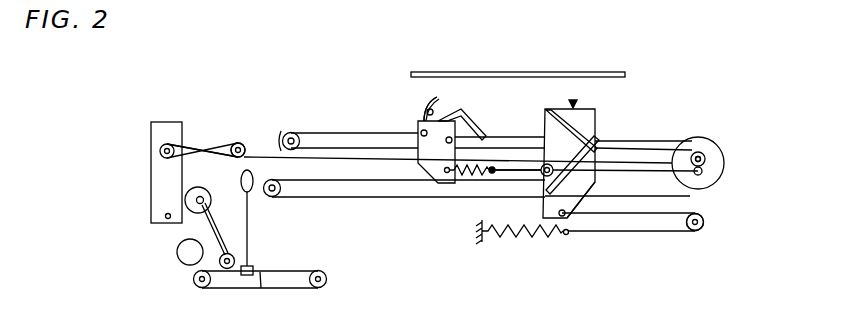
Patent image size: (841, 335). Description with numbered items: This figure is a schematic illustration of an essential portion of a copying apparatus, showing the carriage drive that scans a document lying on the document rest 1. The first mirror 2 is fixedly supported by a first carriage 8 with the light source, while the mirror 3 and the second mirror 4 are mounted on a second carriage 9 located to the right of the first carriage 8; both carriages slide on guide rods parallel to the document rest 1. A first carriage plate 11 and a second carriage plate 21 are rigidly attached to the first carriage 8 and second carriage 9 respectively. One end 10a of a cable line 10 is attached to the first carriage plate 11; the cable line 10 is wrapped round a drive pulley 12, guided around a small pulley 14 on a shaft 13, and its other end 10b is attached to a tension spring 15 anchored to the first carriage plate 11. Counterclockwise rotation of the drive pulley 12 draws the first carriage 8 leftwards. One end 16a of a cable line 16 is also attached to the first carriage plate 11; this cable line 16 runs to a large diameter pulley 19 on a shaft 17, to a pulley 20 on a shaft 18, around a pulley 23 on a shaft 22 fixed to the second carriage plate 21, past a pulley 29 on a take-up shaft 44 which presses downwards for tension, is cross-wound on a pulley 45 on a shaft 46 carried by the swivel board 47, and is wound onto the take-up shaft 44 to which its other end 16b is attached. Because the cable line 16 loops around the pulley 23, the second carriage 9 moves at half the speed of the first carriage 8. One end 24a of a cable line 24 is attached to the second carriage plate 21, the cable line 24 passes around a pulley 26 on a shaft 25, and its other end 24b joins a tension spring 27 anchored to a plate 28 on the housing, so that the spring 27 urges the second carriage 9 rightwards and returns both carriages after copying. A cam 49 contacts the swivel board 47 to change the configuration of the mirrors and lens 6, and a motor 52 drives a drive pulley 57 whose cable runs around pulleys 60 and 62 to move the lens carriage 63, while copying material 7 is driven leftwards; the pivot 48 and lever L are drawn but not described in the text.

The document rest 1 is at (619, 72).
The first mirror 2 is at (465, 137).
The mirror 3 is at (568, 110).
The second mirror 4 is at (567, 222).
The lens 6 is at (241, 182).
The copying material 7 is at (261, 275).
The first carriage 8 is at (469, 112).
The second carriage 9 is at (574, 100).
The cable line 10 is at (336, 133).
The end of cable line 10a is at (422, 132).
The other end of cable line 10b is at (494, 168).
The first carriage plate 11 is at (432, 163).
The drive pulley 12 is at (292, 133).
The shaft 13 is at (701, 157).
The small pulley 14 is at (695, 152).
The tension spring 15 is at (465, 172).
The cable line 16 is at (245, 157).
The end of cable line 16a is at (449, 138).
The other end of cable line 16b is at (236, 143).
The shaft 17 is at (703, 172).
The shaft 18 is at (279, 189).
The large diameter pulley 19 is at (724, 160).
The pulley 20 is at (281, 194).
The second carriage plate 21 is at (597, 112).
The shaft 22 is at (575, 171).
The pulley 23 is at (545, 173).
The cable line 24 is at (660, 230).
The end of cable line 24a is at (560, 225).
The other end of cable line 24b is at (568, 234).
The shaft 25 is at (704, 218).
The pulley 26 is at (701, 228).
The tension spring 27 is at (525, 232).
The plate 28 is at (485, 242).
The pulley 29 is at (243, 145).
The take-up shaft 44 is at (231, 146).
The pulley 45 is at (160, 152).
The shaft 46 is at (165, 144).
The swivel board 47 is at (162, 203).
The pin 48 is at (166, 219).
The cam 49 is at (185, 195).
The motor 52 is at (180, 262).
The drive pulley 57 is at (232, 225).
The pulley 60 is at (203, 287).
The pulley 62 is at (318, 287).
The lens carriage 63 is at (253, 268).
The lever L is at (428, 110).